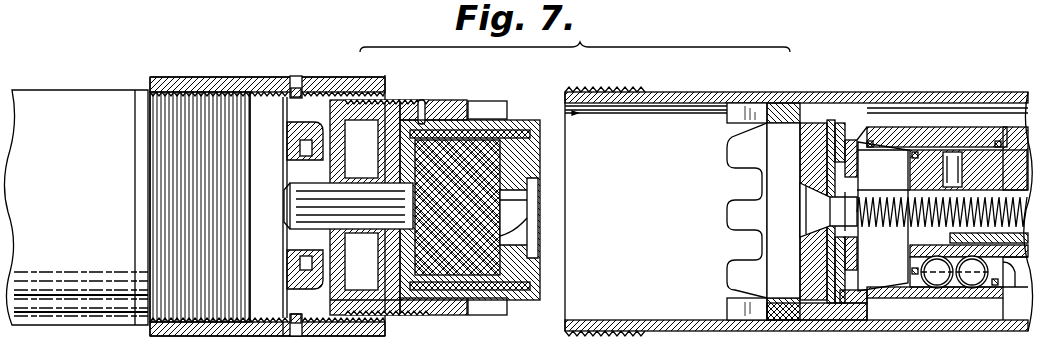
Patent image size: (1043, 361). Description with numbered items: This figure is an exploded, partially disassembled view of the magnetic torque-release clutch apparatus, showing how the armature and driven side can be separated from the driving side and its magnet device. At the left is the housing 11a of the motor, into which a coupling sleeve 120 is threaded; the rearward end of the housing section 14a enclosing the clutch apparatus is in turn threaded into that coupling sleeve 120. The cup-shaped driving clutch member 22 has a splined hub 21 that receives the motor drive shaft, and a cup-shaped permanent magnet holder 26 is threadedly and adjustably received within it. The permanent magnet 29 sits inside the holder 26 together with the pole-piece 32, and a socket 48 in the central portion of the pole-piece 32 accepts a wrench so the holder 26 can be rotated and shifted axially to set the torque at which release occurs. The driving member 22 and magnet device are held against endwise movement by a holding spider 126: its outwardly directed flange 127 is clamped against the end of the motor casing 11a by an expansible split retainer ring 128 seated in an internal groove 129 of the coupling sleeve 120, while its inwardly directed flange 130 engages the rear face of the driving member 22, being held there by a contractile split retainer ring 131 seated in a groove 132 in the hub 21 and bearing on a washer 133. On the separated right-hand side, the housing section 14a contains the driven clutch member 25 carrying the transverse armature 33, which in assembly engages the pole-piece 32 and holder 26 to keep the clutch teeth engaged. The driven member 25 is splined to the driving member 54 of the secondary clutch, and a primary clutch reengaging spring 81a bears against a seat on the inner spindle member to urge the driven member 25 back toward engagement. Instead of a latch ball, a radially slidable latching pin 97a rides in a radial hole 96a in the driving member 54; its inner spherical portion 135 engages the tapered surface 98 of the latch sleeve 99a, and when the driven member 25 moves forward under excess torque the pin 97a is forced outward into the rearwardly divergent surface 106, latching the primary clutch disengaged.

The housing of the motor 11a is at (60, 92).
The coupling sleeve 120 is at (240, 77).
The expansible split retainer ring 128 is at (296, 88).
The internal groove 129 is at (297, 326).
The outwardly directed flange 127 is at (283, 326).
The contractile split retainer ring 131 is at (300, 258).
The permanent magnet holder 26 is at (390, 149).
The pole-piece 32 is at (520, 157).
The permanent magnet 29 is at (457, 207).
The socket 48 is at (520, 215).
The splined hub 21 is at (302, 174).
The holding spider 126 is at (300, 133).
The groove 132 is at (306, 150).
The inwardly directed flange 130 is at (312, 264).
The washer 133 is at (318, 276).
The driving clutch member 22 is at (350, 308).
The housing section 14a is at (740, 98).
The armature 33 is at (810, 124).
The primary clutch reengaging spring 81a is at (887, 229).
The inner spherical portion 135 is at (980, 183).
The driven clutch member 25 is at (903, 128).
The rearwardly divergent surface 106 is at (870, 141).
The driving member of the secondary clutch 54 is at (985, 152).
The latching pin 97a is at (943, 168).
The radial hole 96a is at (945, 152).
The tapered surface 98 is at (960, 126).
The latch sleeve 99a is at (1010, 150).